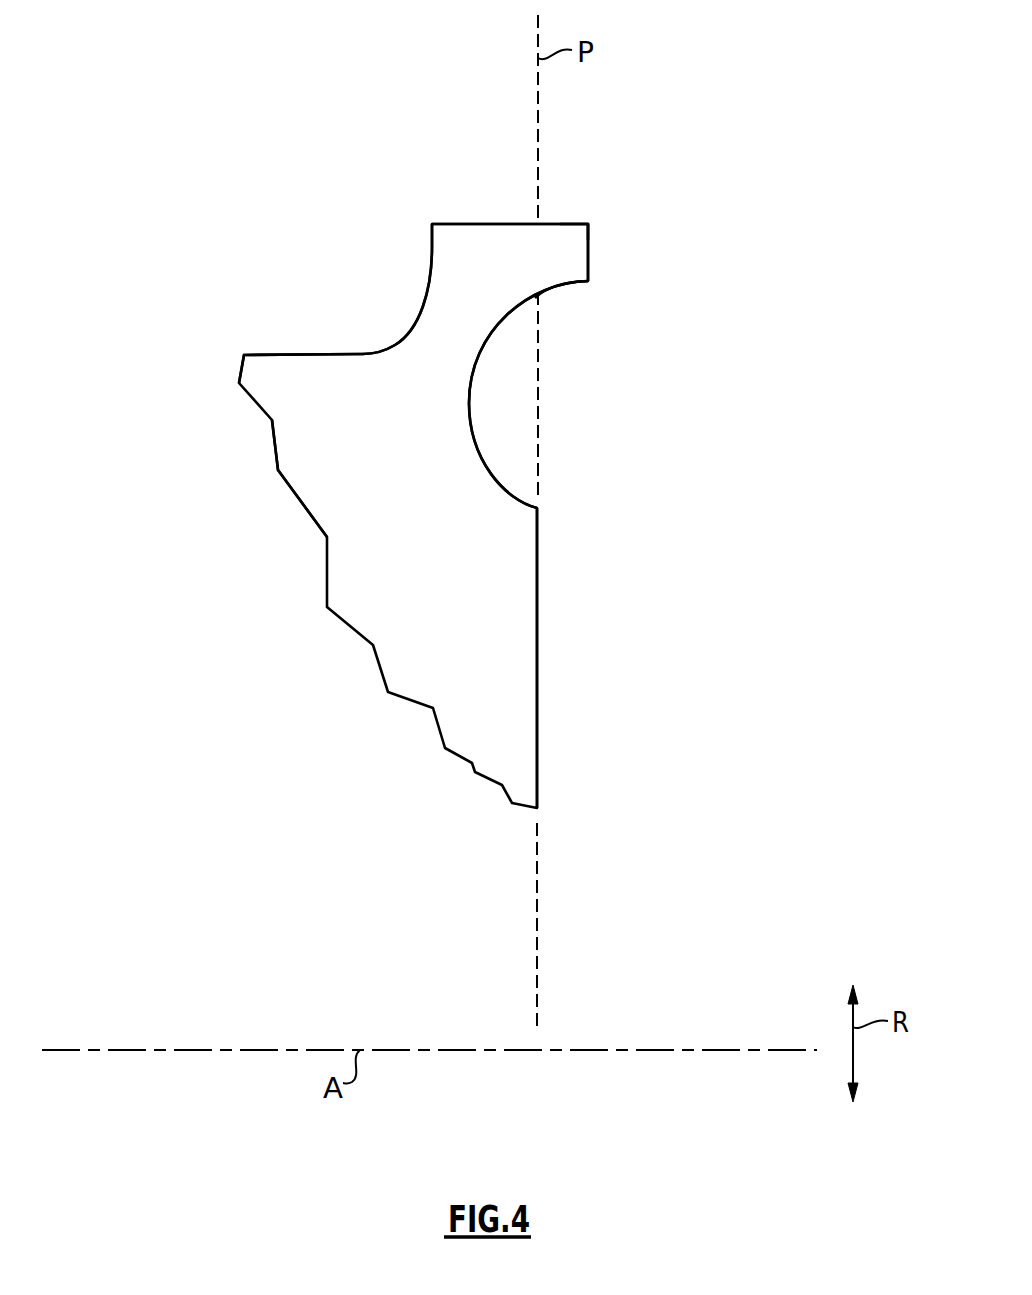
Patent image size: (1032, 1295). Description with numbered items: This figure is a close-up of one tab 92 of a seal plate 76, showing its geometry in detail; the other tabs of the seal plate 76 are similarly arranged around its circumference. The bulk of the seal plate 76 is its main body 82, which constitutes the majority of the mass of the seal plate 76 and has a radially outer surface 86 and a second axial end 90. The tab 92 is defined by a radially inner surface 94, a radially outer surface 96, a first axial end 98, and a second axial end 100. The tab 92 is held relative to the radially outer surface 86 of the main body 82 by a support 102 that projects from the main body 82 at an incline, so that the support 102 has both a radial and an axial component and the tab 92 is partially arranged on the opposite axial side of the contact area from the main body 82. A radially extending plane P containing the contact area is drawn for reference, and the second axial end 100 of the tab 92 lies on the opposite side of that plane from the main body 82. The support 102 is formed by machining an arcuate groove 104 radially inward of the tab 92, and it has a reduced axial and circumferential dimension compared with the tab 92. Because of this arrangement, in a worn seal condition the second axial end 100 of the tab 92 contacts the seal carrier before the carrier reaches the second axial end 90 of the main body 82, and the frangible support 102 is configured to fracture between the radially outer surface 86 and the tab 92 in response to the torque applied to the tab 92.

The seal plate 76 is at (430, 577).
The main body 82 is at (324, 500).
The radially outer surface 86 is at (289, 354).
The second axial end 90 is at (538, 745).
The tab 92 is at (500, 243).
The radially inner surface 94 is at (555, 290).
The radially outer surface 96 is at (573, 224).
The first axial end 98 is at (432, 245).
The second axial end 100 is at (588, 252).
The support 102 is at (433, 328).
The groove 104 is at (527, 415).